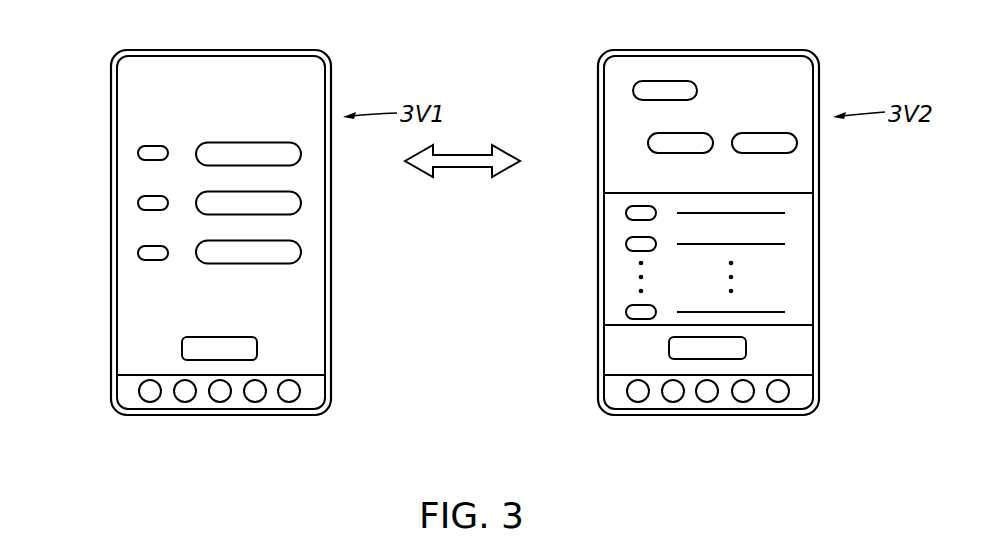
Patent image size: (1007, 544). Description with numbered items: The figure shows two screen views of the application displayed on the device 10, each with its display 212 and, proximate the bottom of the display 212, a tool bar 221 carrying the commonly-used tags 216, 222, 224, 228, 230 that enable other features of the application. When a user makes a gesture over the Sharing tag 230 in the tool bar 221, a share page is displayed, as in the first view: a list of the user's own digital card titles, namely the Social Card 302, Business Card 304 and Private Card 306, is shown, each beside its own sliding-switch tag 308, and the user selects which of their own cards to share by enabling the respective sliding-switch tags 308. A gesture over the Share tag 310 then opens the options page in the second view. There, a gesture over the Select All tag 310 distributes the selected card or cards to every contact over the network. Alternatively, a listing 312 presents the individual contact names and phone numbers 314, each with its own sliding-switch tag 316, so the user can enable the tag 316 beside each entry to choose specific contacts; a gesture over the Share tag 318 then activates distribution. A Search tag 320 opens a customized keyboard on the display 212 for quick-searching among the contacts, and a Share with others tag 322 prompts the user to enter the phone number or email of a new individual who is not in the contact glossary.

The electronic device 10 is at (165, 50).
The display 212 is at (123, 81).
The tool bar 221 is at (122, 386).
The tag 216 is at (143, 398).
The tag 222 is at (180, 398).
The tag 224 is at (225, 400).
The tag 228 is at (260, 398).
The Sharing tag 230 is at (300, 391).
The Social Card 302 is at (301, 154).
The Business Card 304 is at (301, 199).
The Private Card 306 is at (301, 251).
The sliding-switch tag 308 is at (148, 153).
The Share tag / Select All tag 310 is at (182, 349).
The listing of contacts 312 is at (800, 228).
The contact names and phone numbers 314 is at (773, 246).
The sliding-switch tag 316 is at (636, 213).
The Share tag 318 is at (669, 350).
The Search tag 320 is at (636, 90).
The Share with others tag 322 is at (797, 143).